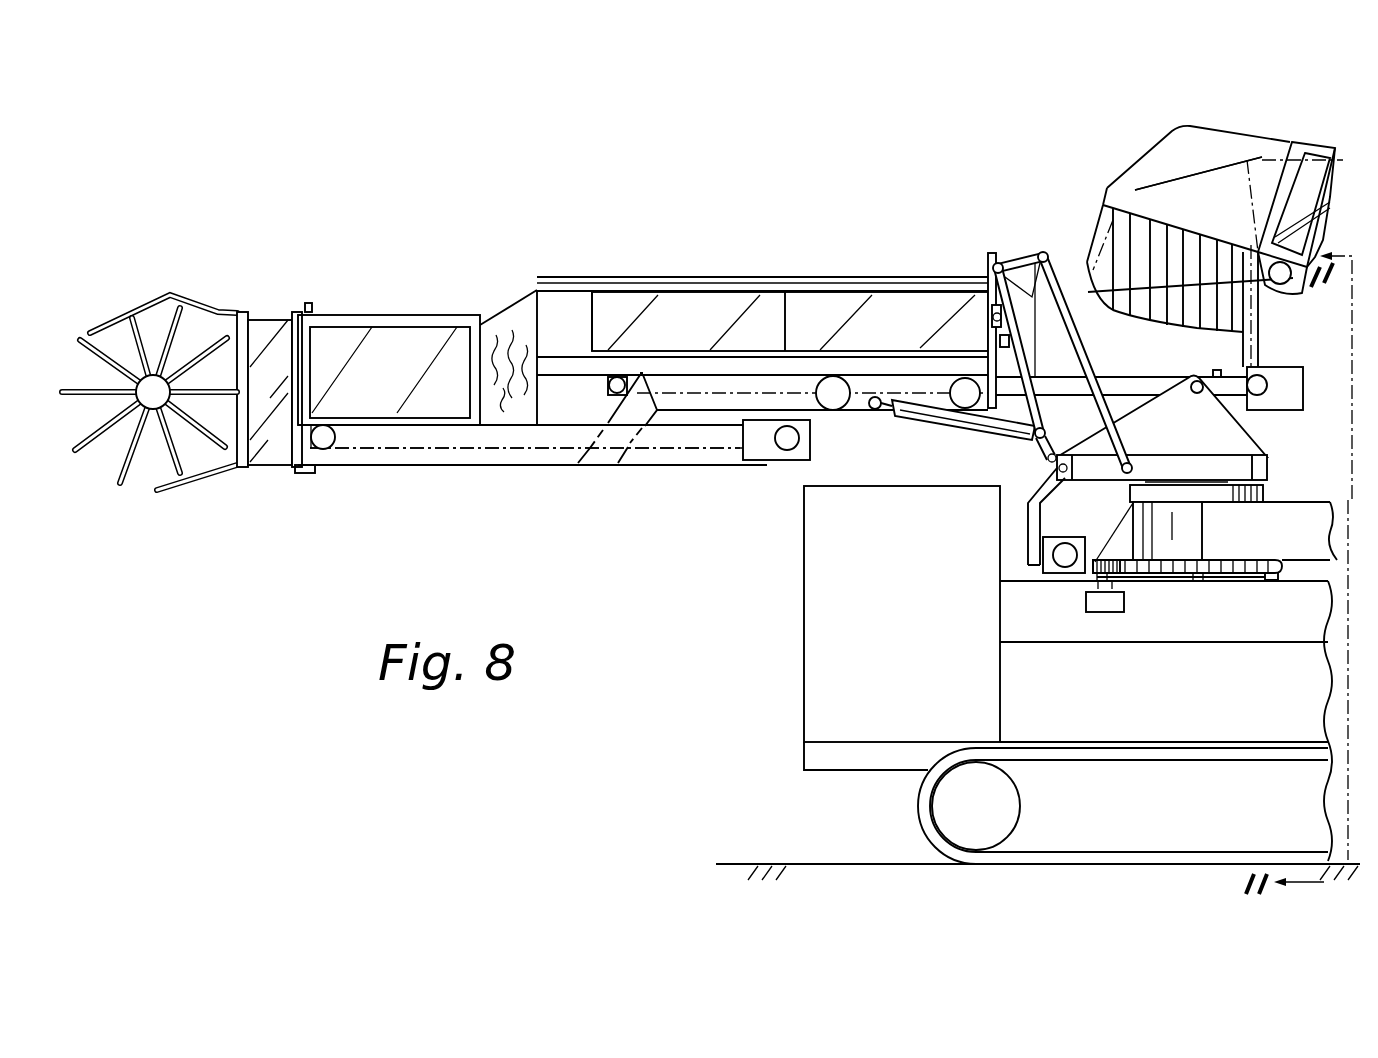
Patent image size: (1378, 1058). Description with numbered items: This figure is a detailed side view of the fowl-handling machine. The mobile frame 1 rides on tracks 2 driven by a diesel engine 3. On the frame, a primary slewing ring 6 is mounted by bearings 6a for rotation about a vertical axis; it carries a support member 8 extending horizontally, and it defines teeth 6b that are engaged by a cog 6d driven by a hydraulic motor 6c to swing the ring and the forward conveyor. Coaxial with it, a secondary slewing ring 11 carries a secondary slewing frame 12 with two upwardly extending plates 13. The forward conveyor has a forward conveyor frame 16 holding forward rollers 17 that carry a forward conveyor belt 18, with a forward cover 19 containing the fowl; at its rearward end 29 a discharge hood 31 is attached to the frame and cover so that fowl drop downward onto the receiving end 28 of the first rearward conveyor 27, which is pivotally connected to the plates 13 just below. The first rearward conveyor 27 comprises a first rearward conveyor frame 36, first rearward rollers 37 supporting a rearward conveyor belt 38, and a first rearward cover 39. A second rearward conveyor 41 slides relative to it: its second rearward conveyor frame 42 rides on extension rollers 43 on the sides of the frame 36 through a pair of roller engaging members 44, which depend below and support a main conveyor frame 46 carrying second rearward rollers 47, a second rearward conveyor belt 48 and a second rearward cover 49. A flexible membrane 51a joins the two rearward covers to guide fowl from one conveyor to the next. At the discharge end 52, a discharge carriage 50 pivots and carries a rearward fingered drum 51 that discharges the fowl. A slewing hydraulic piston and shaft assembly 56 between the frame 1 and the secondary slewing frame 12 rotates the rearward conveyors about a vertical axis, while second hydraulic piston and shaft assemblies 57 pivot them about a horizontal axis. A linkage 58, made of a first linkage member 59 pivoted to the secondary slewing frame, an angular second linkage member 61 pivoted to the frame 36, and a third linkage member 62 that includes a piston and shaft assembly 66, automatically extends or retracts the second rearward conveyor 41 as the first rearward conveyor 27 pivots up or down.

The mobile frame 1 is at (800, 589).
The tracks 2 is at (918, 811).
The diesel engine 3 is at (800, 687).
The primary slewing ring 6 is at (1209, 574).
The bearings 6a is at (1278, 580).
The teeth 6b is at (1288, 577).
The hydraulic motor 6c is at (1108, 614).
The cog 6d is at (1097, 558).
The support member 8 is at (1328, 497).
The secondary slewing ring 11 is at (1268, 494).
The secondary slewing frame 12 is at (1272, 480).
The plates 13 is at (1261, 444).
The forward conveyor frame 16 is at (1310, 140).
The forward rollers 17 is at (1277, 285).
The forward conveyor belt 18 is at (1292, 295).
The forward cover 19 is at (1320, 180).
The first rearward conveyor 27 is at (757, 277).
The receiving end 28 is at (1259, 357).
The rearward end 29 is at (1292, 142).
The discharge hood 31 is at (1200, 128).
The first rearward conveyor frame 36 is at (621, 276).
The first rearward rollers 37 is at (607, 391).
The rearward conveyor belt 38 is at (1131, 377).
The first rearward cover 39 is at (684, 310).
The second rearward conveyor 41 is at (369, 314).
The second rearward conveyor frame 42 is at (556, 467).
The extension rollers 43 is at (949, 392).
The roller engaging members 44 is at (700, 413).
The main conveyor frame 46 is at (427, 467).
The second rearward rollers 47 is at (338, 448).
The second rearward conveyor belt 48 is at (398, 450).
The second rearward cover 49 is at (426, 343).
The discharge carriage 50 is at (150, 303).
The rearward fingered drum 51 is at (66, 388).
The flexible membrane 51a is at (531, 289).
The discharge end 52 is at (308, 303).
The slewing hydraulic piston and shaft assembly 56 is at (1060, 543).
The second hydraulic piston and shaft assemblies 57 is at (1050, 462).
The linkage 58 is at (1047, 251).
The first linkage member 59 is at (1059, 276).
The second linkage member 61 is at (1013, 259).
The third linkage member 62 is at (905, 424).
The piston and shaft assembly 66 is at (978, 438).